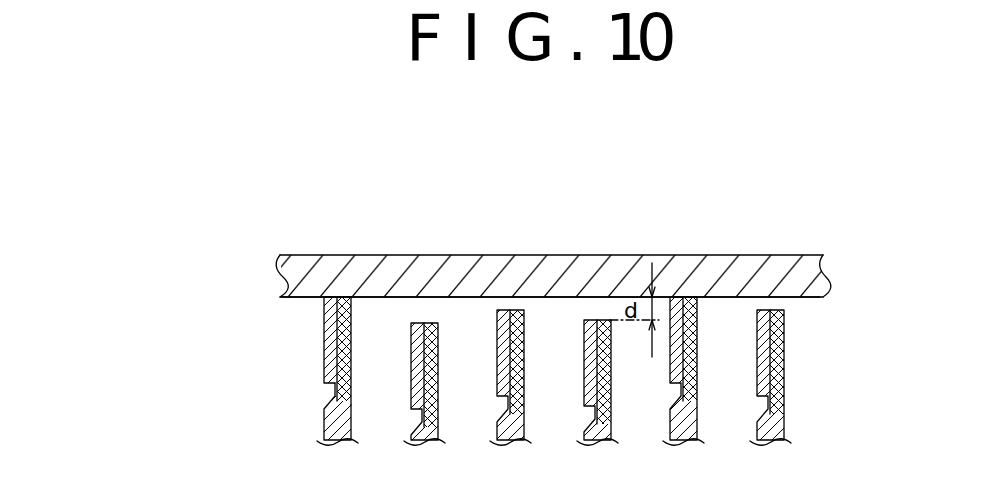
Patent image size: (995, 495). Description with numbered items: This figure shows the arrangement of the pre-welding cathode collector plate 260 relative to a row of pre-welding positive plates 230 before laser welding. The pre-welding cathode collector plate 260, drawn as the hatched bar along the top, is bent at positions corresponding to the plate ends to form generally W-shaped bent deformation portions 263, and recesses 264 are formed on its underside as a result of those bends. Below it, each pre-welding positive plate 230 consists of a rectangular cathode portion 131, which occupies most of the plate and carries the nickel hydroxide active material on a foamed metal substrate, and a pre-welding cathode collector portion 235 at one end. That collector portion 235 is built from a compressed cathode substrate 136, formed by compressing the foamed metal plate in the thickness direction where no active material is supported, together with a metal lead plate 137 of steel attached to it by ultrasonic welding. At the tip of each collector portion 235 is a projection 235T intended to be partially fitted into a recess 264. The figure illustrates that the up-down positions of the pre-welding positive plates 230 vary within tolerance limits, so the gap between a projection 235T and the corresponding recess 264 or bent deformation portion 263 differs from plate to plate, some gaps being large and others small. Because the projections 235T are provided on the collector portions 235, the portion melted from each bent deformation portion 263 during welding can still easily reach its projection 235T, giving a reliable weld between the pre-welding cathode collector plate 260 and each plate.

The pre-welding cathode collector plate 260 is at (553, 239).
The bent deformation portion 263 is at (367, 271).
The recess 264 is at (304, 300).
The pre-welding positive plate 230 is at (209, 377).
The pre-welding cathode collector portion 235 is at (247, 358).
The projection 235T is at (434, 322).
The metal lead plate 137 is at (327, 364).
The compressed cathode substrate 136 is at (336, 388).
The cathode portion 131 is at (325, 425).